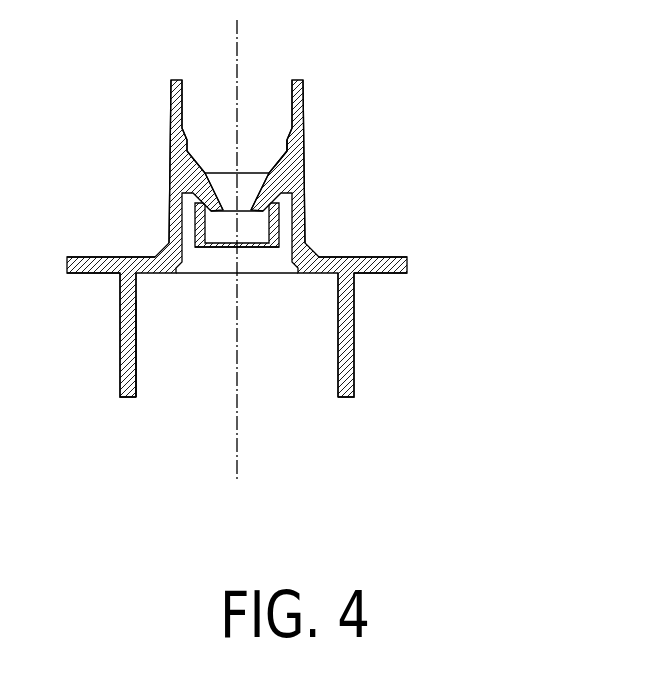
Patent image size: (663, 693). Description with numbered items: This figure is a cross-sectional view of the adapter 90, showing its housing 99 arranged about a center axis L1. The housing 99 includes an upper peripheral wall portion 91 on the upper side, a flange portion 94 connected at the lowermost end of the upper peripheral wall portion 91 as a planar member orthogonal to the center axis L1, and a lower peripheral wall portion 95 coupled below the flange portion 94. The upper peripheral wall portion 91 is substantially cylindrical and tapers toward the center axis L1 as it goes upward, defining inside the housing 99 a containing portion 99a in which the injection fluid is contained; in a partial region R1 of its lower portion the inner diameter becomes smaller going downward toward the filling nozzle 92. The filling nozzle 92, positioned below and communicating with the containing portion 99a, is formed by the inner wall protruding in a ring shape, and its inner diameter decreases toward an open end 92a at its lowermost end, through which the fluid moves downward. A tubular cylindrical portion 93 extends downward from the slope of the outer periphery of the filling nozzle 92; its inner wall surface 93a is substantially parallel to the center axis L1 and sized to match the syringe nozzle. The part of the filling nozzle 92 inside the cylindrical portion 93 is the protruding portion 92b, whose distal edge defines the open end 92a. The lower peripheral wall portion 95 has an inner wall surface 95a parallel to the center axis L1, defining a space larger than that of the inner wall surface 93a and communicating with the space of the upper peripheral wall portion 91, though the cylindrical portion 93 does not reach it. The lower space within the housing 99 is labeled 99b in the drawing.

The adapter 90 is at (437, 110).
The housing 99 is at (304, 148).
The containing portion 99a is at (227, 105).
The lower bore 99b is at (272, 383).
The upper peripheral wall portion 91 is at (171, 200).
The filling nozzle 92 is at (287, 151).
The open end 92a is at (236, 212).
The protruding portion 92b is at (238, 195).
The cylindrical portion 93 is at (280, 218).
The inner wall surface 93a is at (232, 275).
The flange portion 94 is at (370, 257).
The lower peripheral wall portion 95 is at (354, 391).
The inner wall surface 95a is at (137, 367).
The partial region R1 is at (265, 138).
The center axis L1 is at (237, 473).